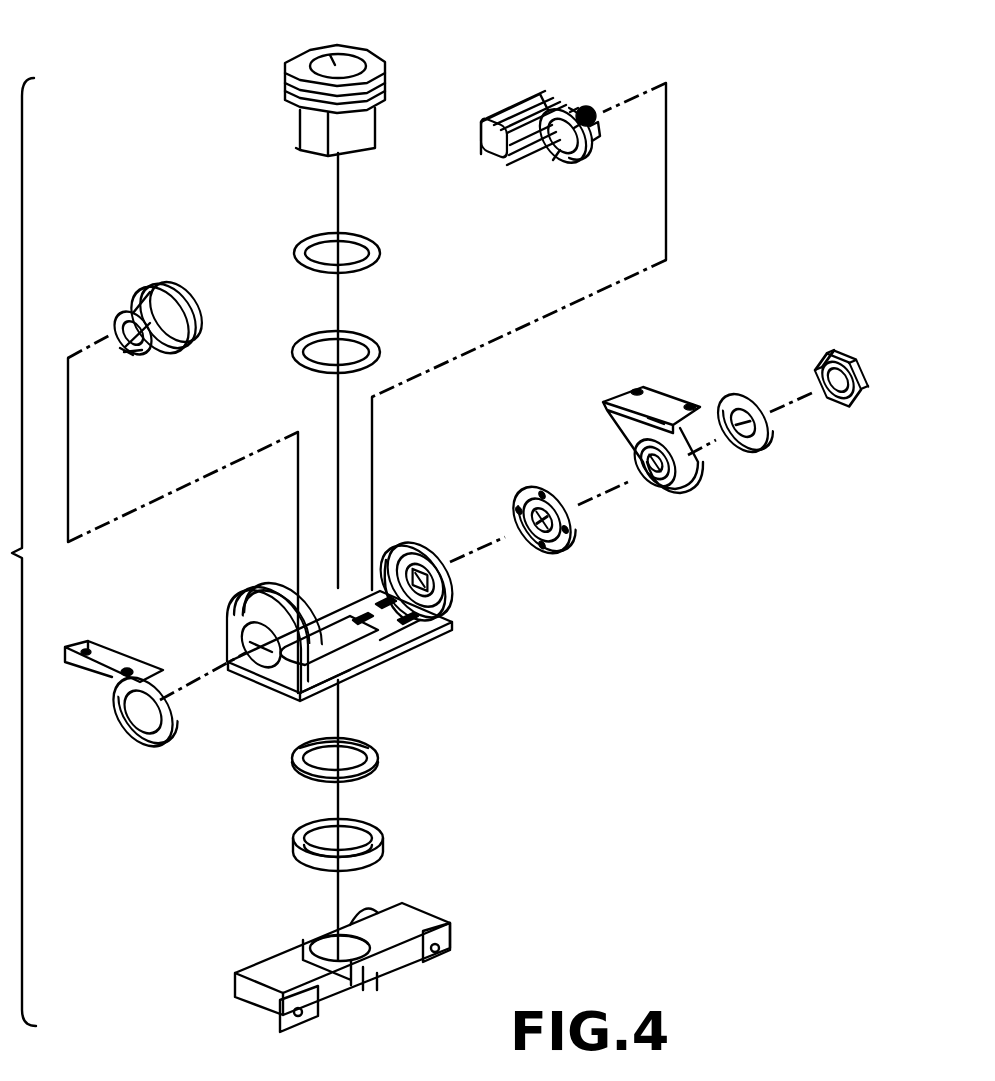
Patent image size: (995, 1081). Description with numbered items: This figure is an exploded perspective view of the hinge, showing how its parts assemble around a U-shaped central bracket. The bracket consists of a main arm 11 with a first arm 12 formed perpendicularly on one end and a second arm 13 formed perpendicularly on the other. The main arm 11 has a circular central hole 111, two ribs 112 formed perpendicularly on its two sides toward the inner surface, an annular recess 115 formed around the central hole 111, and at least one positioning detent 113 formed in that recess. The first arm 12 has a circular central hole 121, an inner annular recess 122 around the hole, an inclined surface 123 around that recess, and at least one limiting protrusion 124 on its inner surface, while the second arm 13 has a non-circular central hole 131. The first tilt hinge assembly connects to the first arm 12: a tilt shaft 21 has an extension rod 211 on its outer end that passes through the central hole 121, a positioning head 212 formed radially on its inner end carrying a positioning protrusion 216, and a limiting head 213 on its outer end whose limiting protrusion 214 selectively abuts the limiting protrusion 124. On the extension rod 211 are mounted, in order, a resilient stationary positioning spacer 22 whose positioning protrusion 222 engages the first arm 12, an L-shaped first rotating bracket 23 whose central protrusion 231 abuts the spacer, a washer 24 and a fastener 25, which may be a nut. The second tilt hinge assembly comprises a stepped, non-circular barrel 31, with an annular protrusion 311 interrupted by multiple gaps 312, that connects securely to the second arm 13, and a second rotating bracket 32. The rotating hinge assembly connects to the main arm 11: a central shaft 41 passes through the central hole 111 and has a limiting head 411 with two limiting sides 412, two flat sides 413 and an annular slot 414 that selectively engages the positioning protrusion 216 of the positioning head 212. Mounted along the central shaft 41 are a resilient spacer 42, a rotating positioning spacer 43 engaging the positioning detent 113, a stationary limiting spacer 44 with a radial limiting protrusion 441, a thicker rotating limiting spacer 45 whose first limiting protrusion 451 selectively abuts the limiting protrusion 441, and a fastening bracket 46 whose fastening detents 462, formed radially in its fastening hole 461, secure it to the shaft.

The main arm 11 is at (355, 646).
The central hole 111 is at (300, 600).
The ribs 112 is at (393, 664).
The positioning detent 113 is at (340, 681).
The annular recess 115 is at (283, 612).
The first arm 12 is at (386, 579).
The central hole 121 is at (447, 581).
The inner annular recess 122 is at (450, 597).
The inclined surface 123 is at (392, 592).
The limiting protrusion 124 is at (432, 617).
The second arm 13 is at (242, 631).
The central hole 131 is at (243, 648).
The tilt shaft 21 is at (544, 130).
The extension rod 211 is at (582, 103).
The positioning head 212 is at (553, 160).
The limiting head 213 is at (548, 110).
The limiting protrusion 214 is at (596, 142).
The positioning protrusion 216 is at (474, 158).
The stationary positioning spacer 22 is at (506, 519).
The positioning protrusion 222 is at (516, 515).
The first rotating bracket 23 is at (628, 440).
The central protrusion 231 is at (638, 467).
The washer 24 is at (764, 443).
The fastener 25 is at (842, 361).
The barrel 31 is at (145, 331).
The annular protrusion 311 is at (142, 357).
The gaps 312 is at (112, 332).
The second rotating bracket 32 is at (108, 693).
The central shaft 41 is at (335, 94).
The limiting head 411 is at (305, 54).
The limiting sides 412 is at (390, 77).
The flat sides 413 is at (288, 91).
The annular slot 414 is at (296, 101).
The resilient spacer 42 is at (360, 238).
The rotating positioning spacer 43 is at (376, 346).
The stationary limiting spacer 44 is at (332, 759).
The limiting protrusion 441 is at (305, 750).
The rotating limiting spacer 45 is at (369, 838).
The first limiting protrusion 451 is at (364, 827).
The fastening bracket 46 is at (359, 959).
The fastening hole 461 is at (312, 950).
The fastening detents 462 is at (330, 937).